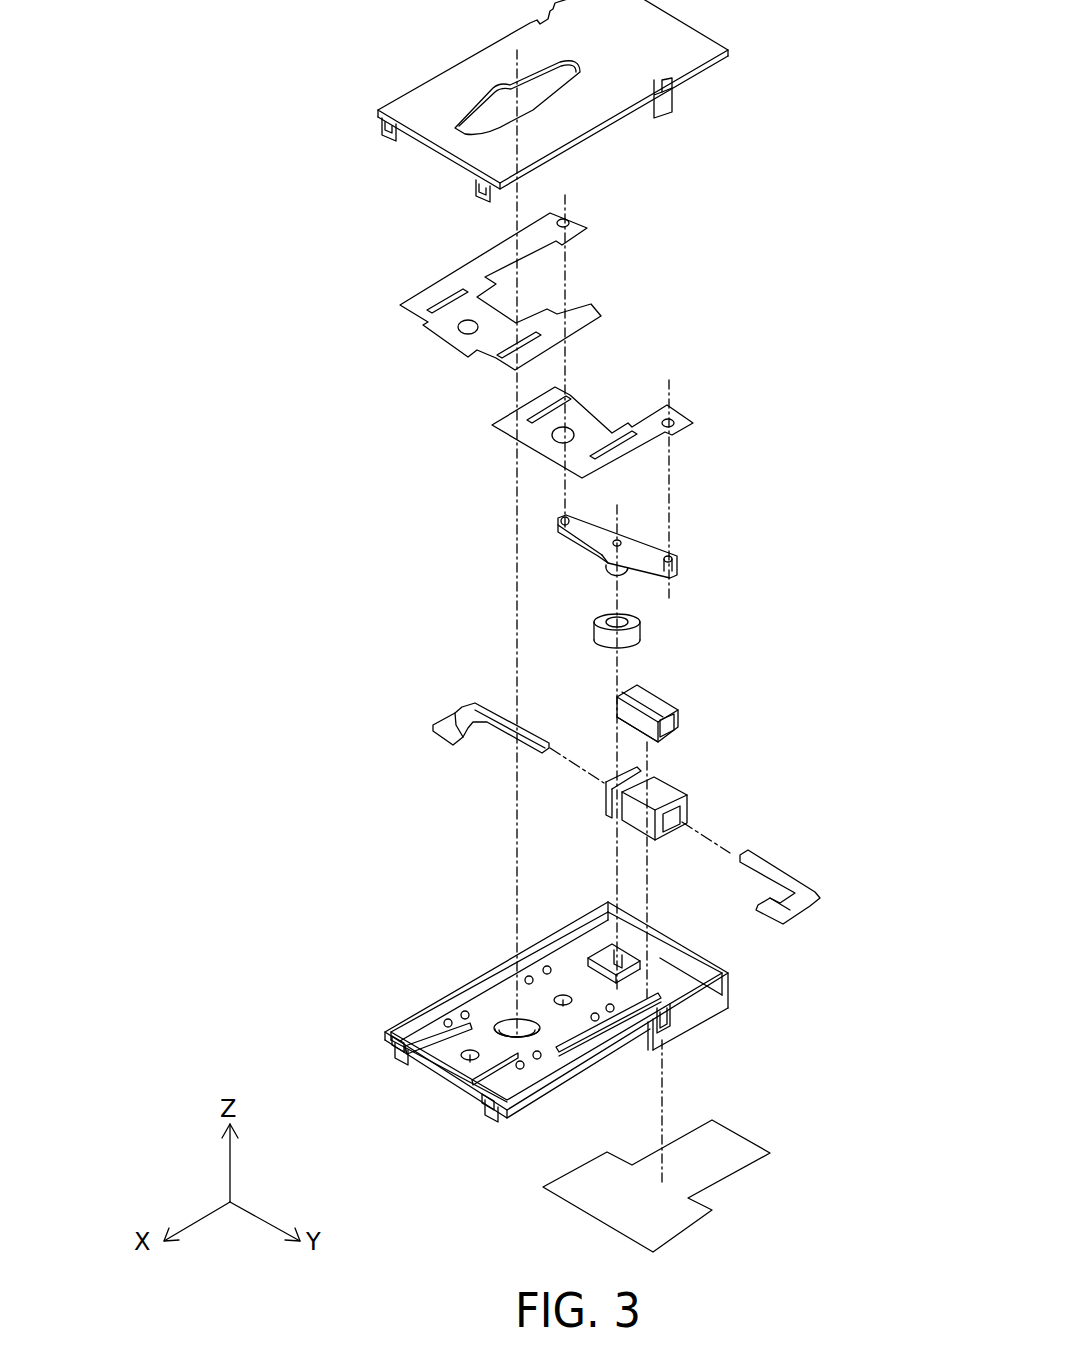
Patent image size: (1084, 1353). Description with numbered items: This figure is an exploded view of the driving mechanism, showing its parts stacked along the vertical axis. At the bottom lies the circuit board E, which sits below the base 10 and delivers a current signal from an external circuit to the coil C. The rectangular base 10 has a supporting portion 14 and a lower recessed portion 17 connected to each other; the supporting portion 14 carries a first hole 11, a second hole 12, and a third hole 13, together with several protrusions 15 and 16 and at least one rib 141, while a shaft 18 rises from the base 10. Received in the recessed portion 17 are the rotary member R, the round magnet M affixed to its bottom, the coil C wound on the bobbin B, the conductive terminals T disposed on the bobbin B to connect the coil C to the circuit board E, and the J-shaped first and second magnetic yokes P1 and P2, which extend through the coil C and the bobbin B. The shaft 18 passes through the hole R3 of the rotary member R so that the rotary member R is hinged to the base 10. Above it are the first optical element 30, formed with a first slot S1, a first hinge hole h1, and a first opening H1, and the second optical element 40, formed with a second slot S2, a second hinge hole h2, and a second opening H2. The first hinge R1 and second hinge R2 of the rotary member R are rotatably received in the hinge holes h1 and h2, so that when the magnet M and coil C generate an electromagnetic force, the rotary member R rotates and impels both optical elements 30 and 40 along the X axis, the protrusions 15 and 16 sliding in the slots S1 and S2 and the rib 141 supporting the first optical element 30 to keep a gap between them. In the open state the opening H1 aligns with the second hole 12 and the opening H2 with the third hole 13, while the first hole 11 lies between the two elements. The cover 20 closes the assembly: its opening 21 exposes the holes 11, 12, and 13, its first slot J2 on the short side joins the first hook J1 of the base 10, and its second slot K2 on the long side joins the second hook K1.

The base 10 is at (395, 1035).
The first hole 11 is at (512, 1015).
The second hole 12 is at (468, 1060).
The third hole 13 is at (565, 995).
The supporting portion 14 is at (565, 1050).
The rib 141 is at (397, 1044).
The protrusion 15 is at (455, 1010).
The protrusion 16 is at (547, 966).
The recessed portion 17 is at (688, 975).
The shaft 18 is at (618, 960).
The cover 20 is at (437, 68).
The opening 21 is at (505, 90).
The first optical element 30 is at (440, 345).
The second optical element 40 is at (590, 420).
The first opening H1 is at (468, 320).
The second opening H2 is at (565, 428).
The first hinge hole h1 is at (566, 220).
The second hinge hole h2 is at (669, 420).
The first slot S1 is at (450, 308).
The second slot S2 is at (535, 418).
The first hook J1 is at (395, 1048).
The first slot J2 is at (384, 128).
The second hook K1 is at (680, 1025).
The second slot K2 is at (676, 84).
The rotary member R is at (580, 553).
The first hinge R1 is at (561, 521).
The second hinge R2 is at (669, 555).
The hole R3 is at (620, 540).
The magnet M is at (630, 622).
The coil C is at (650, 702).
The conductive terminal T is at (640, 768).
The bobbin B is at (682, 818).
The first magnetic yoke P1 is at (453, 727).
The second magnetic yoke P2 is at (800, 890).
The circuit board E is at (737, 1148).